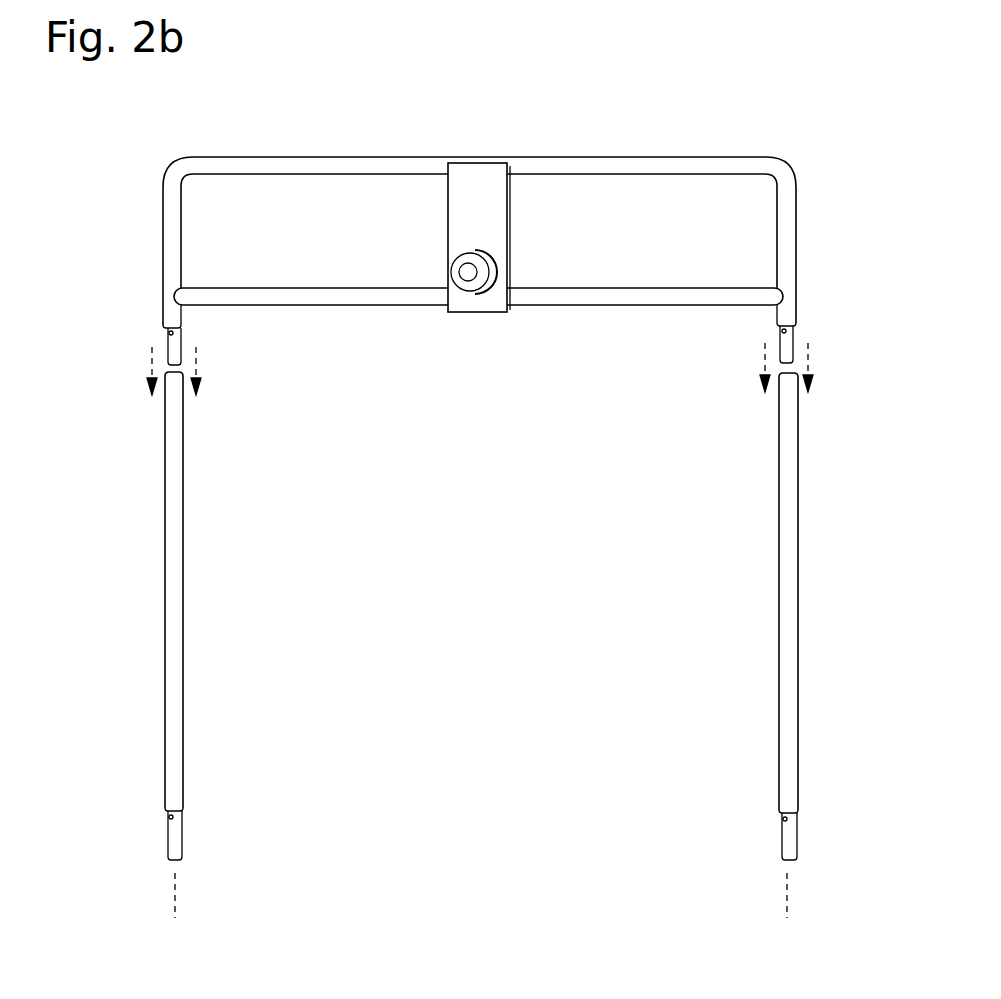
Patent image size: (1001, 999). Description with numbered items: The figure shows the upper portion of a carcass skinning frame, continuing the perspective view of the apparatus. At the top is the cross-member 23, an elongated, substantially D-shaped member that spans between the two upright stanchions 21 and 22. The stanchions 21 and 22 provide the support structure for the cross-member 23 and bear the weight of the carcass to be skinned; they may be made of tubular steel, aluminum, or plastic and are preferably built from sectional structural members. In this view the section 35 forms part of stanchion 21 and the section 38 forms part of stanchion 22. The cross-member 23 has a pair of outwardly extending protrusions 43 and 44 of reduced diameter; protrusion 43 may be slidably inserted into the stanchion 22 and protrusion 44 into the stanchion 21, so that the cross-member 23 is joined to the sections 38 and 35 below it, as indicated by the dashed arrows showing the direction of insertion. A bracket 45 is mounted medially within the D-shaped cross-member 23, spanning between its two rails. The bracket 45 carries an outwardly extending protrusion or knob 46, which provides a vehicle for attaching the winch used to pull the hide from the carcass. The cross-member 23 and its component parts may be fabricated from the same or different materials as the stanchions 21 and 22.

The stanchion 21 is at (836, 649).
The stanchion 22 is at (152, 651).
The cross-member 23 is at (524, 229).
The section 35 is at (798, 688).
The section 38 is at (183, 595).
The protrusion 43 is at (182, 337).
The protrusion 44 is at (793, 343).
The bracket 45 is at (510, 215).
The knob 46 is at (470, 292).